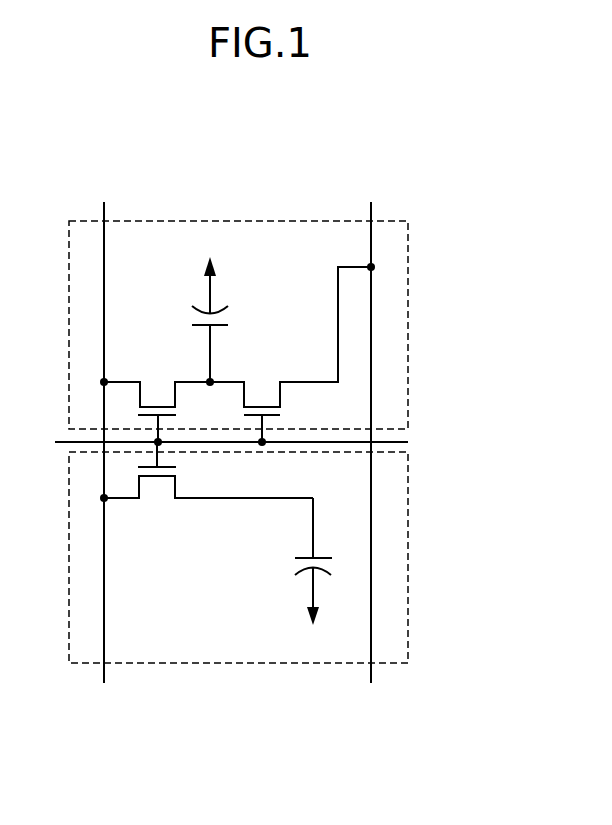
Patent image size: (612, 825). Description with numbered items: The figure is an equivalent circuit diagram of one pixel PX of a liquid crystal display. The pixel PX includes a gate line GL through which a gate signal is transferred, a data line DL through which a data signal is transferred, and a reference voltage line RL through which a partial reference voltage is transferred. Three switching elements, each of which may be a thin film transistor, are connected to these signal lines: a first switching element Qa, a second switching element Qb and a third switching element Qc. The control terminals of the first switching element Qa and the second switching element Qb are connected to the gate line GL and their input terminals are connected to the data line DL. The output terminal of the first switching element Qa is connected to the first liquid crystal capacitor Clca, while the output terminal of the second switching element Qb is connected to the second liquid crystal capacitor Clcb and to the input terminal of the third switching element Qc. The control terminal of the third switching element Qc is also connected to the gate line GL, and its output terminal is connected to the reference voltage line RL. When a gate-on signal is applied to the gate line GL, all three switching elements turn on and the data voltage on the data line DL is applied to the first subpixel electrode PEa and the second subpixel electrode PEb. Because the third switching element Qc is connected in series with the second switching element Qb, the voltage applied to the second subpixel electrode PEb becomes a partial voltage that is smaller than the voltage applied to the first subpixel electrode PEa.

The pixel PX is at (235, 727).
The data line DL is at (105, 431).
The reference voltage line RL is at (371, 431).
The gate line GL is at (217, 444).
The first switching element Qa is at (208, 483).
The second switching element Qb is at (157, 400).
The third switching element Qc is at (262, 400).
The first liquid crystal capacitor Clca is at (289, 561).
The second liquid crystal capacitor Clcb is at (232, 319).
The first subpixel electrode PEa is at (407, 556).
The second subpixel electrode PEb is at (408, 324).